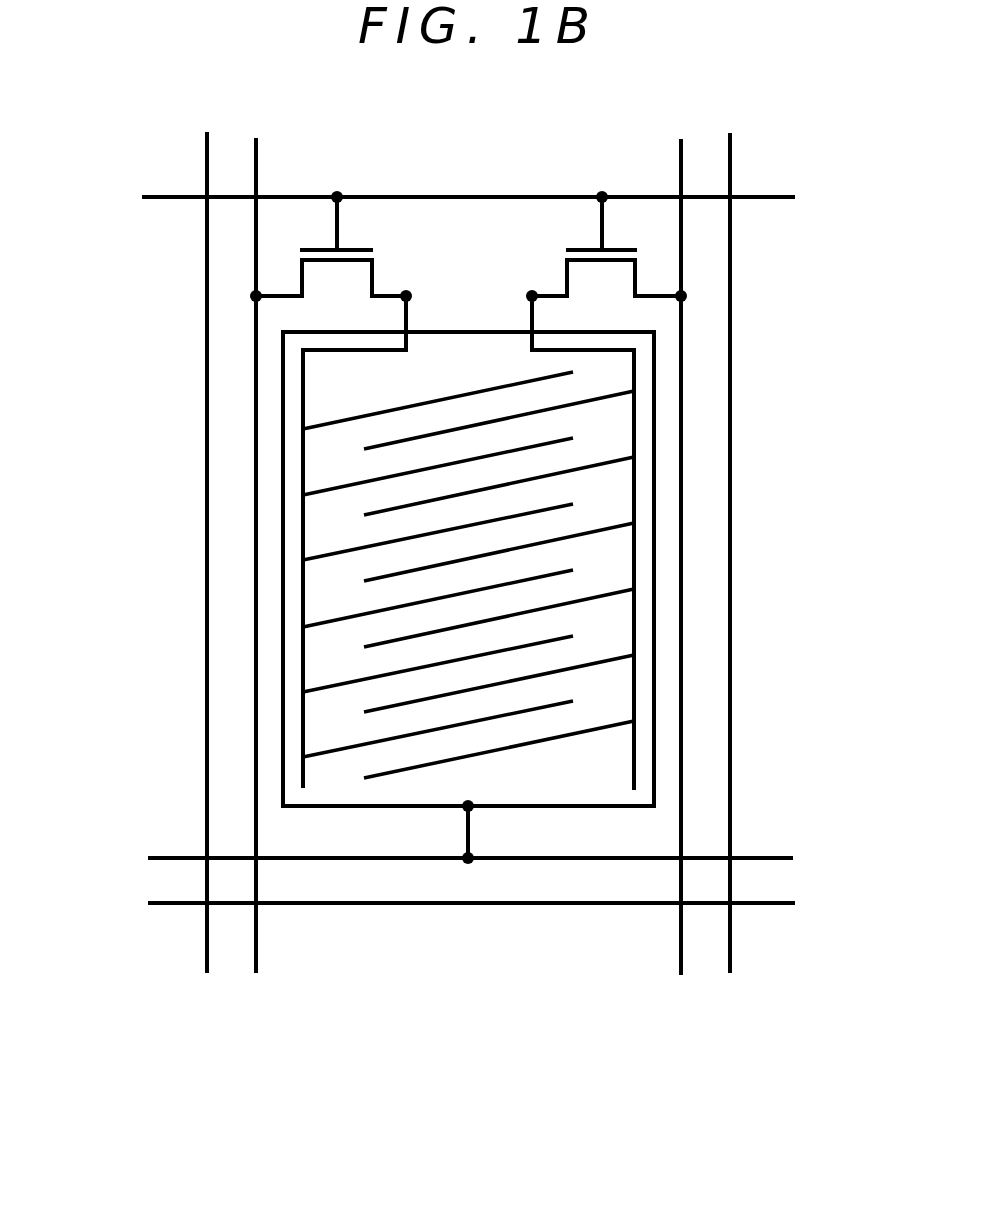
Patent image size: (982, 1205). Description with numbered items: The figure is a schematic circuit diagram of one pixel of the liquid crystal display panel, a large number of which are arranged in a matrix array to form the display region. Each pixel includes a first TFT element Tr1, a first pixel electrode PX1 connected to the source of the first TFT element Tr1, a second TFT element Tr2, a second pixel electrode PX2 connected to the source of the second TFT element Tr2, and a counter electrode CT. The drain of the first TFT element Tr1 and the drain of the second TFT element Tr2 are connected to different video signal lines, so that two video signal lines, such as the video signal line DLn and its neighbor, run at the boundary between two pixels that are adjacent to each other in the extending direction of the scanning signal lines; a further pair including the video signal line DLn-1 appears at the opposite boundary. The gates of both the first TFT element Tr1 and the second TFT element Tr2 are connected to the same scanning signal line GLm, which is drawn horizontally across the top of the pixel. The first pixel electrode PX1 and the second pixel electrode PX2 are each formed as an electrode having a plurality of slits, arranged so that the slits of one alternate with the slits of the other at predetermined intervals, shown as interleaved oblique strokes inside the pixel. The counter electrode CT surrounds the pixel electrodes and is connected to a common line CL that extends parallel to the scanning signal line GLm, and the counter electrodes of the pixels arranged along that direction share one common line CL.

The scanning signal line GLm is at (177, 197).
The common line CL is at (752, 858).
The video signal line DLn-1 is at (206, 458).
The video signal line DLn is at (255, 368).
The first TFT element Tr1 is at (357, 232).
The second TFT element Tr2 is at (573, 235).
The first pixel electrode PX1 is at (303, 602).
The second pixel electrode PX2 is at (634, 627).
The counter electrode CT is at (525, 806).